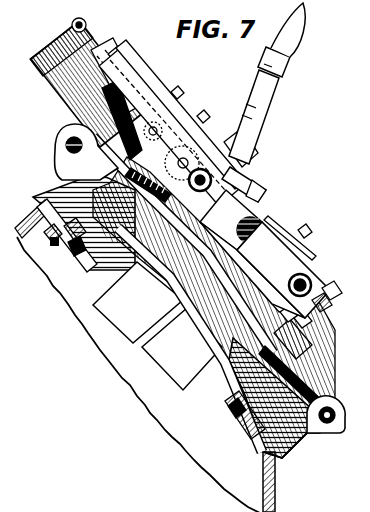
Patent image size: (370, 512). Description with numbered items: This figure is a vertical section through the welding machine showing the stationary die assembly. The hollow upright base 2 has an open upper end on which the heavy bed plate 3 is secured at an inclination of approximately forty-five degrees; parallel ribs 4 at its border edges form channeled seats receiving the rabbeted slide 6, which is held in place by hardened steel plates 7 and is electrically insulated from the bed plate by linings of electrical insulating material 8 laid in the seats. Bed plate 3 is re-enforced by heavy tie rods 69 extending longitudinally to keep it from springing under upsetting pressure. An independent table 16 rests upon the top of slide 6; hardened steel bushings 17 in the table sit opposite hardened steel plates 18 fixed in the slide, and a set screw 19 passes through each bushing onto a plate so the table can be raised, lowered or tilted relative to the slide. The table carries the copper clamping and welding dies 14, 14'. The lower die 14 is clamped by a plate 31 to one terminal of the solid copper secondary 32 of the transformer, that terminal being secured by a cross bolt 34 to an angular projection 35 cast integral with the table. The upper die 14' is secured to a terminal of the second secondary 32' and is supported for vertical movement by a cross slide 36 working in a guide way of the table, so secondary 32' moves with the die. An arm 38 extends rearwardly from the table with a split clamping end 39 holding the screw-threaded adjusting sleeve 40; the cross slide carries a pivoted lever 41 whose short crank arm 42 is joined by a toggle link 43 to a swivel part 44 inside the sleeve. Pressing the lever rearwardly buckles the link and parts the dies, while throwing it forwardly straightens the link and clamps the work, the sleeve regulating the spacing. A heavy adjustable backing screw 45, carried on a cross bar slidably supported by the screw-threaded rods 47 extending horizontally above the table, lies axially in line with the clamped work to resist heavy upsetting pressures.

The hollow upright base 2 is at (275, 484).
The bed plate 3 is at (300, 448).
The rib 4 is at (340, 438).
The slide 6 is at (278, 368).
The hardened steel plate 7 is at (334, 412).
The electrical insulating material 8 is at (308, 385).
The lower die 14 is at (283, 261).
The upper die 14' is at (259, 205).
The table 16 is at (297, 362).
The hardened steel bushing 17 is at (306, 342).
The hardened steel plate 18 is at (226, 343).
The set screw 19 is at (307, 327).
The clamping plate 31 is at (308, 233).
The secondary 32 is at (138, 374).
The second secondary 32' is at (99, 271).
The cross bolt 34 is at (328, 306).
The angular projection 35 is at (330, 294).
The cross slide 36 is at (230, 146).
The arm 38 is at (58, 80).
The split clamping end 39 is at (55, 46).
The adjusting sleeve 40 is at (113, 56).
The pivoted lever 41 is at (258, 98).
The crank arm 42 is at (176, 108).
The toggle link 43 is at (156, 90).
The swivel part 44 is at (140, 75).
The backing screw 45 is at (252, 254).
The screw-threaded rod 47 is at (230, 170).
The tie rod 69 is at (66, 145).